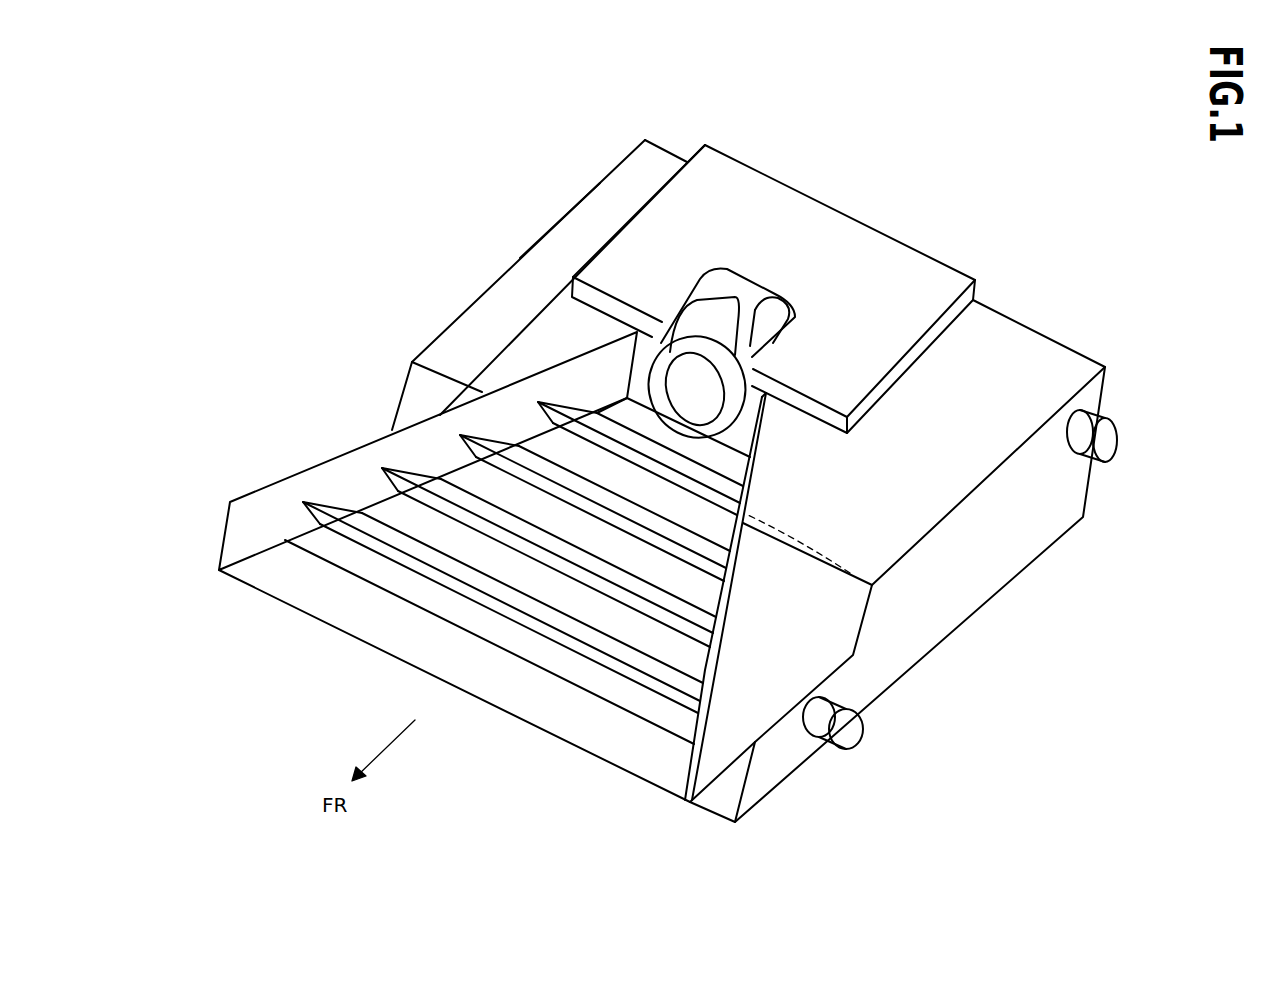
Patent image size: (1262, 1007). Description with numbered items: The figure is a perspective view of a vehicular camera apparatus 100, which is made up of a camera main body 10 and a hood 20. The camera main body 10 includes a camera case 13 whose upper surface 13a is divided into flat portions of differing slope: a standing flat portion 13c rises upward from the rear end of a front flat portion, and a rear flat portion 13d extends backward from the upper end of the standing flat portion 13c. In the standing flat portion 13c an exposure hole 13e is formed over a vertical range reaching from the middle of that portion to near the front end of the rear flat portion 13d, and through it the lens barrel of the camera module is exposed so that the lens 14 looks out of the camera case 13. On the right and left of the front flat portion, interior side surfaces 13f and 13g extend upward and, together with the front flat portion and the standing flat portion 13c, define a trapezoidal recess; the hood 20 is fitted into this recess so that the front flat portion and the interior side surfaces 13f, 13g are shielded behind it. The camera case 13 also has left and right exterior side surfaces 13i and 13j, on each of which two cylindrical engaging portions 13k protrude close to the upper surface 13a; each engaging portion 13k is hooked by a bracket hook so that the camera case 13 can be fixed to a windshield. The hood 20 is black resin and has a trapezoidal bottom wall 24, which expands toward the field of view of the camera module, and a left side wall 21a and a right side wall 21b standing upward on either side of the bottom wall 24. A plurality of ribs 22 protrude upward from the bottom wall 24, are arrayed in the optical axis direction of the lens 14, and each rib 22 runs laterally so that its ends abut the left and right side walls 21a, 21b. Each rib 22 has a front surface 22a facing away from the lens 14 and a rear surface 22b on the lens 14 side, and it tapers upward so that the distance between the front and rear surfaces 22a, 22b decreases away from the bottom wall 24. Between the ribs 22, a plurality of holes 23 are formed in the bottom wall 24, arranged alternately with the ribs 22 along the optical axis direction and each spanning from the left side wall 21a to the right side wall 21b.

The camera apparatus 100 is at (946, 162).
The camera main body 10 is at (1050, 337).
The camera case 13 is at (1107, 390).
The upper surface 13a is at (943, 483).
The standing flat portion 13c is at (742, 438).
The rear flat portion 13d is at (918, 280).
The exposure hole 13e is at (731, 310).
The interior side surface 13f is at (585, 348).
The interior side surface 13g is at (850, 573).
The exterior side surface 13i is at (978, 563).
The exterior side surface 13j is at (537, 238).
The engaging portion 13k is at (1108, 438).
The lens 14 is at (660, 345).
The hood 20 is at (274, 603).
The left side wall 21a is at (697, 735).
The right side wall 21b is at (230, 500).
The rib 22 is at (478, 484).
The front surface 22a is at (580, 412).
The rear surface 22b is at (538, 402).
The hole 23 is at (680, 507).
The bottom wall 24 is at (352, 614).